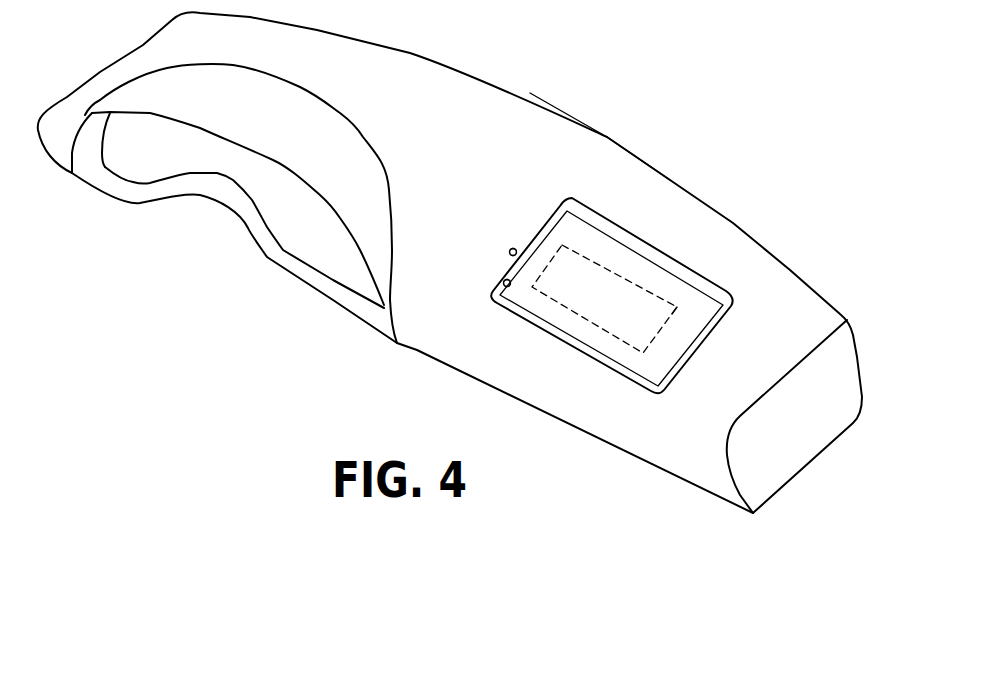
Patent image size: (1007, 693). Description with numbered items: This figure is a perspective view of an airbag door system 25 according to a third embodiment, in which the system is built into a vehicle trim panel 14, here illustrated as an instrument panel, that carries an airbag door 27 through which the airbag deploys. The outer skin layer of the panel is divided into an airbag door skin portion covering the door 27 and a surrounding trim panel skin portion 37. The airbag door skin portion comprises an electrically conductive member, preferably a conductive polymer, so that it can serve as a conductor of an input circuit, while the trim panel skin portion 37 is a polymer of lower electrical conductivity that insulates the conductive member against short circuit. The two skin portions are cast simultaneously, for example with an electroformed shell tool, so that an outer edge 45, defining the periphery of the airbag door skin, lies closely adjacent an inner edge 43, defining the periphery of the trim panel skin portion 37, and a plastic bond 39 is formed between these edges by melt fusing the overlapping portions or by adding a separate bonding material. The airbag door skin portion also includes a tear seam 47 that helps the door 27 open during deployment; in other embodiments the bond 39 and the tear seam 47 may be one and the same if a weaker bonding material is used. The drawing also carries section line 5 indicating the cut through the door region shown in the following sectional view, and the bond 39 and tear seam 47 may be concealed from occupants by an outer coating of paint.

The airbag door system 25 is at (862, 232).
The trim panel 14 is at (557, 133).
The trim panel skin portion 37 is at (593, 153).
The plastic bond 39 is at (655, 248).
The airbag door 27 is at (660, 285).
The tear seam 47 is at (678, 308).
The inner edge 43 is at (510, 252).
The outer edge 45 is at (503, 283).
The section line 5- 5 is at (523, 347).